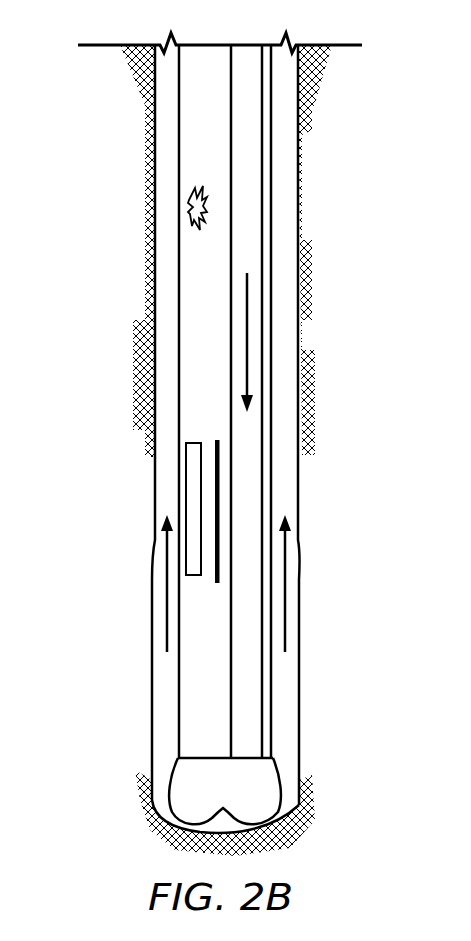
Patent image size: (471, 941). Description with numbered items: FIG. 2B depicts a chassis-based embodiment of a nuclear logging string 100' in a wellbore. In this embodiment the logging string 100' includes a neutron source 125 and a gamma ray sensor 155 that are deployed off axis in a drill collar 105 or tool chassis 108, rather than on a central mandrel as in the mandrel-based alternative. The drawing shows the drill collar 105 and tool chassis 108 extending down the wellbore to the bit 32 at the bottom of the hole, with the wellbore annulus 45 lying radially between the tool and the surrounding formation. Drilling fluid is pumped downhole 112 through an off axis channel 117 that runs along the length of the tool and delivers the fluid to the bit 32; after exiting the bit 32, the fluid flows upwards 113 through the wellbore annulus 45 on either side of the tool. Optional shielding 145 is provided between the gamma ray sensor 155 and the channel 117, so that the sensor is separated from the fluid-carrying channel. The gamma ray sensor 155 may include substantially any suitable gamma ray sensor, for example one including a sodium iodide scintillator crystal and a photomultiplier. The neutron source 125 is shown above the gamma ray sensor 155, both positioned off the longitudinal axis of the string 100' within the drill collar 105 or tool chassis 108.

The logging string 100' is at (66, 129).
The off axis channel 117 is at (247, 132).
The wellbore annulus 45 is at (285, 199).
The neutron source 125 is at (192, 209).
The tool chassis 108 is at (205, 328).
The downhole flow 112 is at (250, 353).
The gamma ray sensor 155 is at (195, 497).
The shielding 145 is at (218, 507).
The upward flow 113 is at (285, 585).
The drill collar 105 is at (178, 685).
The bit 32 is at (240, 797).